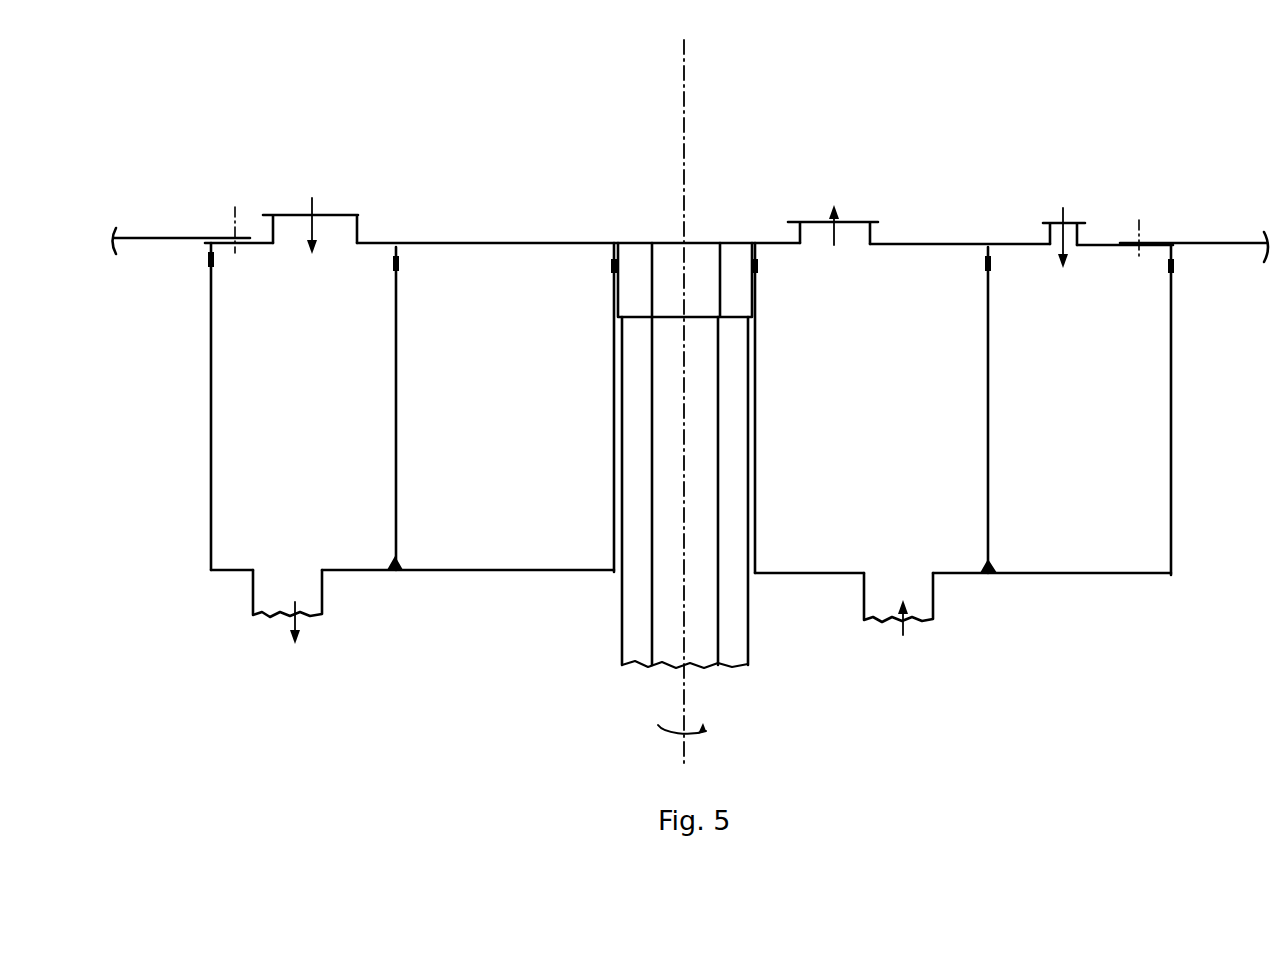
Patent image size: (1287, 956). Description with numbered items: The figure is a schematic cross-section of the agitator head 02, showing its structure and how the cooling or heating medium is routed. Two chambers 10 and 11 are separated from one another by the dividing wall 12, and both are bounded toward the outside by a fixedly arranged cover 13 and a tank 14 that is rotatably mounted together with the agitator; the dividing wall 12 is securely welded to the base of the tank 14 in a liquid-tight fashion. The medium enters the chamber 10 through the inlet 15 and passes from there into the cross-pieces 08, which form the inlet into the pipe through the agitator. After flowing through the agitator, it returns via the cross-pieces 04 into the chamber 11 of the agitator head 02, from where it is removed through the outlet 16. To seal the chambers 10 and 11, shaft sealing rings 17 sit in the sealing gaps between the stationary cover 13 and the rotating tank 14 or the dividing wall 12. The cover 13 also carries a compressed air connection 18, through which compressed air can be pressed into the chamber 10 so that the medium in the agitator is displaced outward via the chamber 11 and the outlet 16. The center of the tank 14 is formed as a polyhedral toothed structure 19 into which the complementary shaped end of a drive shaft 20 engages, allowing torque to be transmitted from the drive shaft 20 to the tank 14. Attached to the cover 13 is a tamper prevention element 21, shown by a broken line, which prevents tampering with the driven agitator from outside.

The agitator head 02 is at (868, 134).
The cross-pieces forming the return 04 is at (922, 602).
The cross-pieces forming the inlet 08 is at (308, 598).
The chamber 10 is at (300, 428).
The chamber 11 is at (510, 429).
The dividing wall 12 is at (397, 325).
The cover 13 is at (530, 242).
The tank 14 is at (478, 572).
The inlet 15 is at (333, 228).
The outlet 16 is at (848, 230).
The shaft sealing rings 17 is at (208, 265).
The compressed air connection 18 is at (1068, 230).
The polyhedral toothed structure 19 is at (702, 260).
The drive shaft 20 is at (730, 623).
The tamper prevention element 21 is at (150, 238).